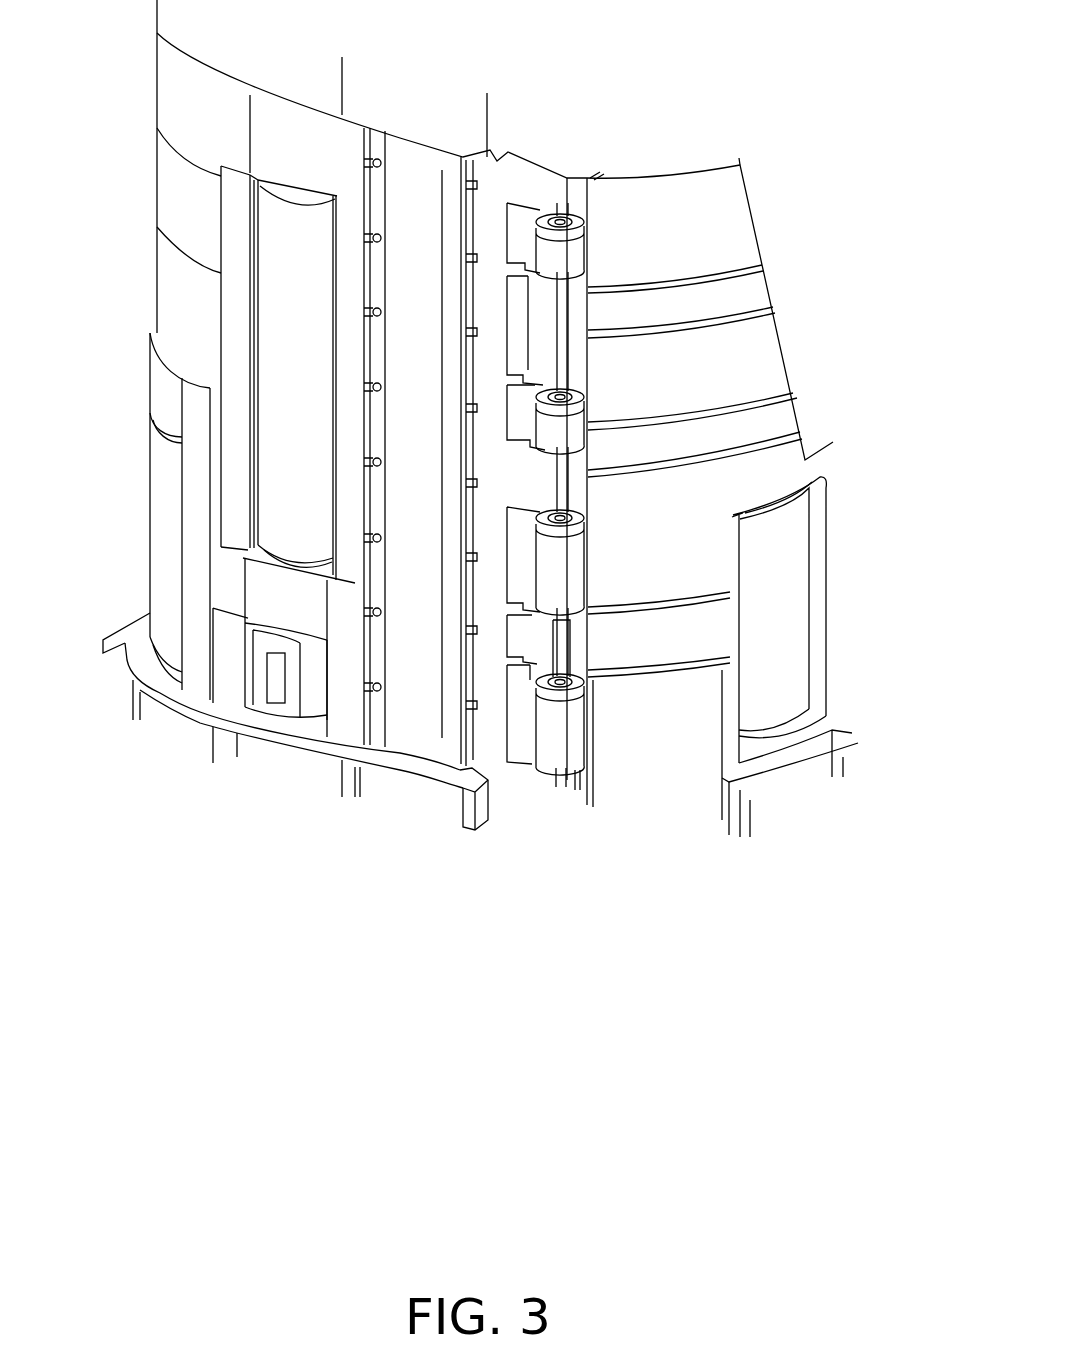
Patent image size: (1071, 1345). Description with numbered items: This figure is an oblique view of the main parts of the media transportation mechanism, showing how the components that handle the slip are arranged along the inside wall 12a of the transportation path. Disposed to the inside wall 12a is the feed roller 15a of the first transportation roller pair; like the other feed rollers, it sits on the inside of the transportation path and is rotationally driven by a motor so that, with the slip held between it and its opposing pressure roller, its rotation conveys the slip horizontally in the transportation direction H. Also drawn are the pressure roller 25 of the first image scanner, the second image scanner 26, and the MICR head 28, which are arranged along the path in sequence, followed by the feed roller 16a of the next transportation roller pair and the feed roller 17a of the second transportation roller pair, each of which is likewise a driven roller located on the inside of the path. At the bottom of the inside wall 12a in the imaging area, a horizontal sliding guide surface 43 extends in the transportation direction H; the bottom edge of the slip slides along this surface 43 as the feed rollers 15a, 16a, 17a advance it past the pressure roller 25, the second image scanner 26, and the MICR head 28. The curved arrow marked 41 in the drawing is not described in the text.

The rotation direction / outer cylinder 41 is at (268, 135).
The feed roller 16a is at (283, 304).
The feed roller 17a is at (167, 480).
The transportation direction H is at (510, 468).
The inside wall 12a is at (727, 218).
The feed roller 15a is at (778, 603).
The MICR head 28 is at (275, 680).
The second image scanner 26 is at (413, 660).
The horizontal sliding guide surface 43 is at (418, 765).
The pressure roller 25 is at (565, 737).